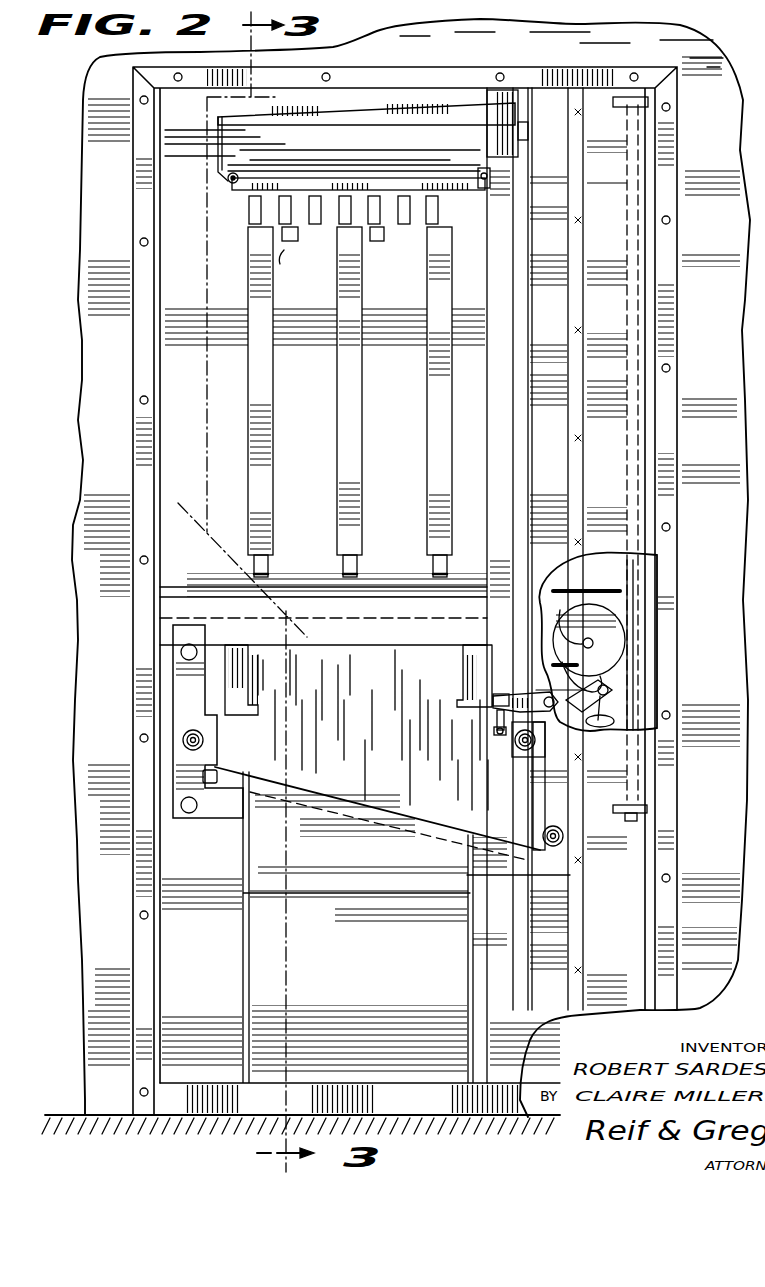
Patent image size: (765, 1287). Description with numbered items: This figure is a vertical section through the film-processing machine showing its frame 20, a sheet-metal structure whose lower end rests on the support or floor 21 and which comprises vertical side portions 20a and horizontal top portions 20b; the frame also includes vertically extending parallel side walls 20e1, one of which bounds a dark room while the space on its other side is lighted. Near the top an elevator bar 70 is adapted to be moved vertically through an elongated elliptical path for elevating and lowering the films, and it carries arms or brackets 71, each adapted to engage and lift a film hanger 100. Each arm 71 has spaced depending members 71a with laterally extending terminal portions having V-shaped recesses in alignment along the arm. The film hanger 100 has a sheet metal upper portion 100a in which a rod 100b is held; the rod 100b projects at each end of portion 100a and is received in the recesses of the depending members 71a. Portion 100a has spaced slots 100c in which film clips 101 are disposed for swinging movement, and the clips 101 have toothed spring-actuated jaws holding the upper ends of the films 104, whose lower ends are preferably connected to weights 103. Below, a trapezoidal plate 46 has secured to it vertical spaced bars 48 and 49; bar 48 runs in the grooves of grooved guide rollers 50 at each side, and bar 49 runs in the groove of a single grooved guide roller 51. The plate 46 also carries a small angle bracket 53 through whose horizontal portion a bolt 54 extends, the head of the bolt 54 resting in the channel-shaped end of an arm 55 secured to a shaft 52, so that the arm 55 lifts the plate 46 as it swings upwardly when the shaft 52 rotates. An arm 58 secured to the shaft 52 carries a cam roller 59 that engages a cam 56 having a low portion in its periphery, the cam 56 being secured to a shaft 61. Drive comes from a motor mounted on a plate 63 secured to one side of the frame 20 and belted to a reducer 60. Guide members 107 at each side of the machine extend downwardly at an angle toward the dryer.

The frame 20 is at (696, 134).
The vertical side portions 20a is at (138, 928).
The horizontal top portions 20b is at (457, 78).
The vertically extending parallel side walls 20e1 is at (572, 910).
The support or floor 21 is at (530, 1110).
The trapezoidal plate 46 is at (424, 820).
The vertical spaced bar 48 is at (540, 795).
The vertical spaced bar 49 is at (206, 750).
The grooved guide roller 50 is at (555, 826).
The grooved guide roller 51 is at (196, 752).
The shaft 52 is at (546, 712).
The angle bracket 53 is at (498, 736).
The bolt 54 is at (492, 716).
The arm 55 is at (542, 704).
The cam 56 is at (577, 616).
The arm 58 is at (599, 639).
The cam roller 59 is at (606, 688).
The reducer 60 is at (615, 716).
The shaft 61 is at (561, 620).
The plate 63 is at (608, 700).
The elevator bar 70 is at (520, 134).
The arm or bracket 71 is at (333, 112).
The depending member 71a is at (481, 173).
The film hanger 100 is at (384, 183).
The sheet metal upper portion 100a is at (452, 192).
The rod 100b is at (262, 160).
The slot 100c is at (290, 228).
The film clip 101 is at (345, 245).
The weight 103 is at (357, 560).
The film 104 is at (352, 443).
The guide member 107 is at (456, 688).